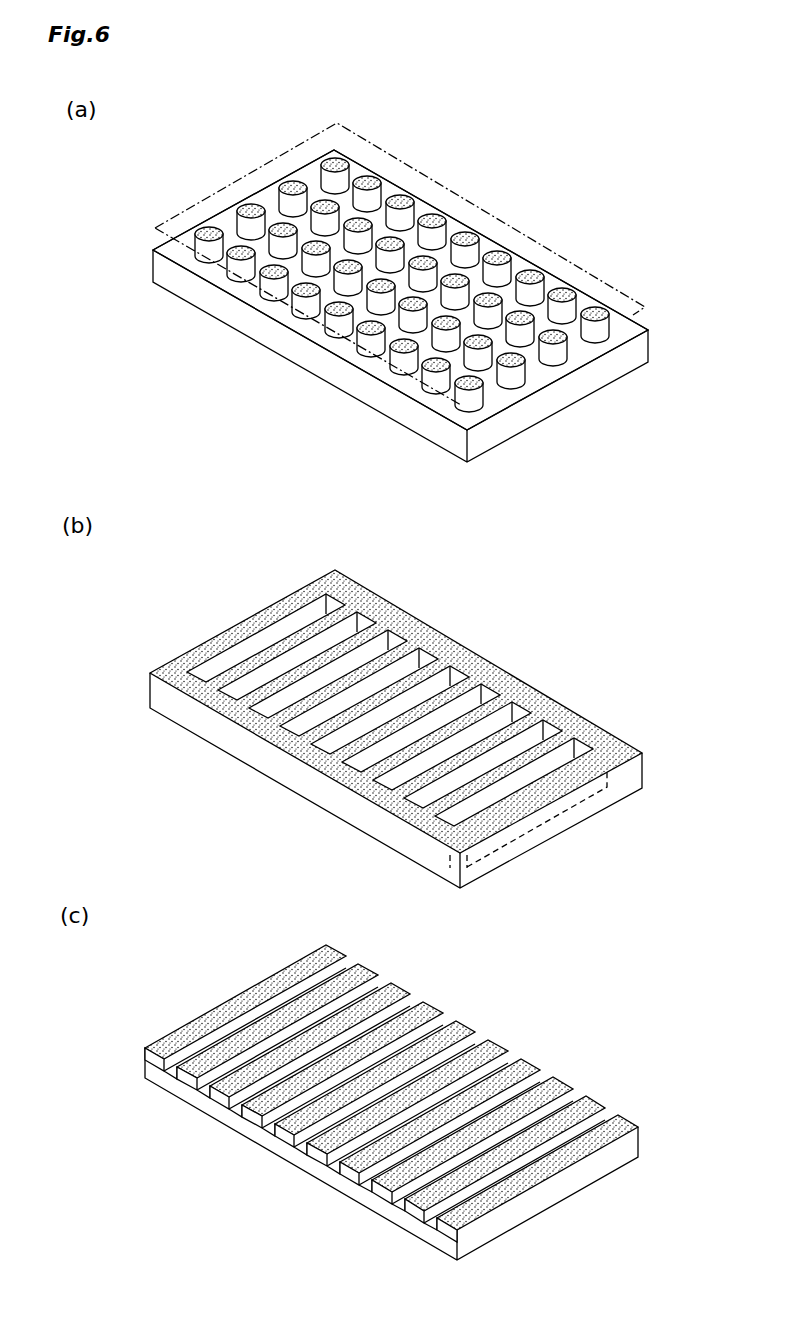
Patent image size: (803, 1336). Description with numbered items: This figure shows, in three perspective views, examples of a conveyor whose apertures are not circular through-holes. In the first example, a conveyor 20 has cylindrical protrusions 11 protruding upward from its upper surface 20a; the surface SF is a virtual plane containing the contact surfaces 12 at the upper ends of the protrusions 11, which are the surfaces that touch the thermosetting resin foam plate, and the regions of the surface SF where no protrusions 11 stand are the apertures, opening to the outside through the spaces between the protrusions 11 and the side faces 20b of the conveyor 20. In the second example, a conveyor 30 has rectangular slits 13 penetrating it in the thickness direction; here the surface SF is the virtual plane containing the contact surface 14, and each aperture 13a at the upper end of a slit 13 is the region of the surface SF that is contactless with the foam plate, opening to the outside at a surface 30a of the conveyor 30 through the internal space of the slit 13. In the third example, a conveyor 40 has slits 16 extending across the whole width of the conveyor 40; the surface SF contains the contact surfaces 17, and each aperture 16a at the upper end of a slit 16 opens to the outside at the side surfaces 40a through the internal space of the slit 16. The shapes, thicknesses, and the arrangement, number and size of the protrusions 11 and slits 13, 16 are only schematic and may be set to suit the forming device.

The cylindrical protrusion 11 is at (256, 205).
The contact surface 12 is at (230, 240).
The rectangular slit 13 is at (258, 640).
The aperture 13a is at (218, 650).
The contact surface 14 is at (342, 598).
The slit 16 is at (365, 968).
The aperture 16a is at (255, 1023).
The contact surface 17 is at (238, 1000).
The conveyor 20 is at (407, 297).
The upper surface 20a is at (655, 326).
The side surface of base 20b is at (268, 184).
The conveyor 30 is at (392, 709).
The surface 30a is at (318, 790).
The conveyor 40 is at (400, 1082).
The side surface 40a is at (146, 1045).
The surface SF is at (462, 197).